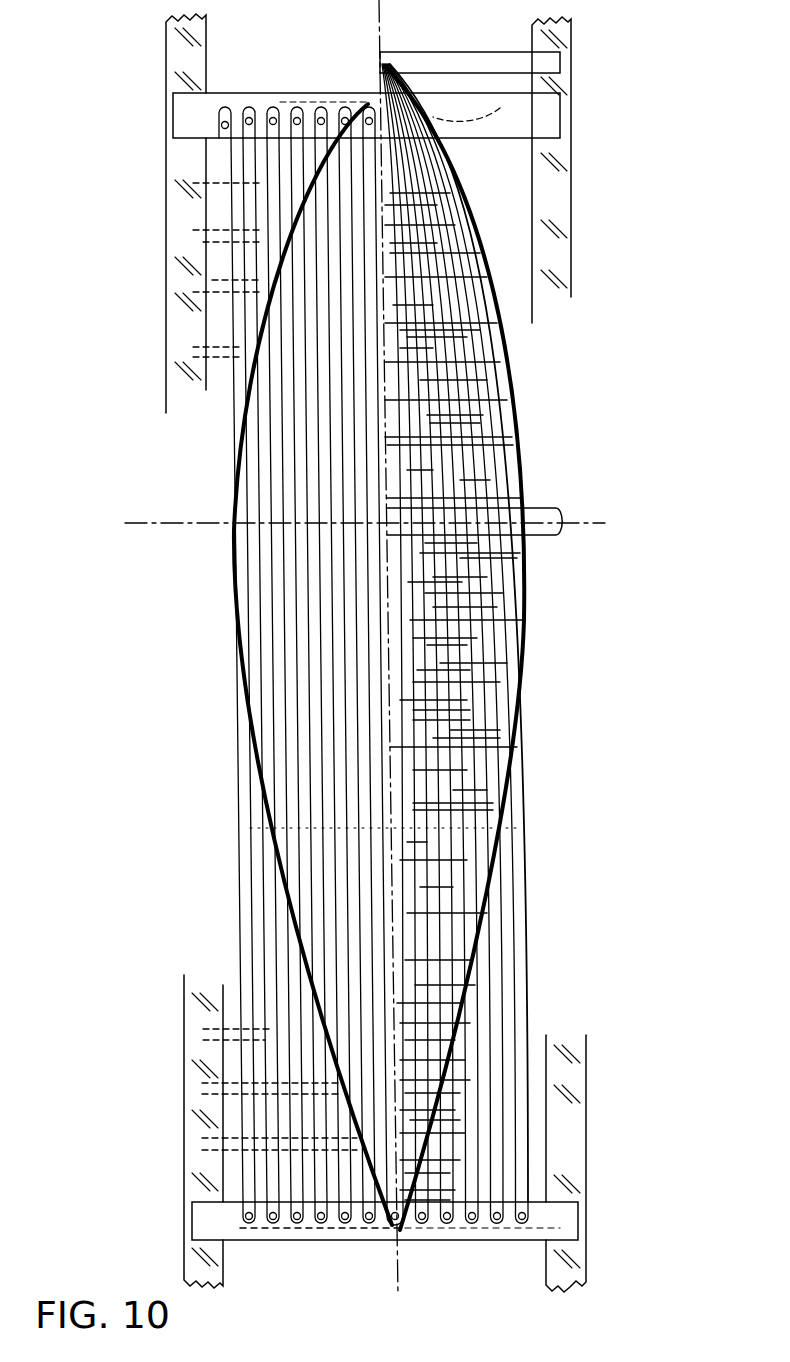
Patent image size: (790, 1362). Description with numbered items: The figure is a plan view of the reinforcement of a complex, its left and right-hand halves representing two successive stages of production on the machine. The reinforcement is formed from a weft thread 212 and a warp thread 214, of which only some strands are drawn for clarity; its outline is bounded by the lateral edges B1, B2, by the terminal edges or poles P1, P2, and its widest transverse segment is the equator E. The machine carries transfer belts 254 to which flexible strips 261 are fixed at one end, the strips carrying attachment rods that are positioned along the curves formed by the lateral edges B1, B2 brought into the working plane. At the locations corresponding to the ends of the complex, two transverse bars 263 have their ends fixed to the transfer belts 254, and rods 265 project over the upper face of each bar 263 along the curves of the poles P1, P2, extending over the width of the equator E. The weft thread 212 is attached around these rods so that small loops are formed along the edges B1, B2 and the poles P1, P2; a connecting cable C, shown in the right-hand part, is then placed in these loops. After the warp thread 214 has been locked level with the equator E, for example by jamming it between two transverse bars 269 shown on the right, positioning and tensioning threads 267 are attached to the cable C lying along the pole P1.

The weft thread 212 is at (497, 666).
The warp thread 214 is at (282, 922).
The transfer belts 254 is at (178, 322).
The flexible strips 261 is at (192, 282).
The transverse bars 263 is at (187, 136).
The rods 265 is at (220, 124).
The positioning and tensioning threads 267 is at (420, 80).
The transverse bars 269 is at (540, 513).
The pole P1 is at (262, 110).
The pole P2 is at (288, 1225).
The connecting cable C is at (425, 110).
The equator E is at (160, 527).
The lateral edge B1 is at (258, 773).
The lateral edge B2 is at (525, 792).